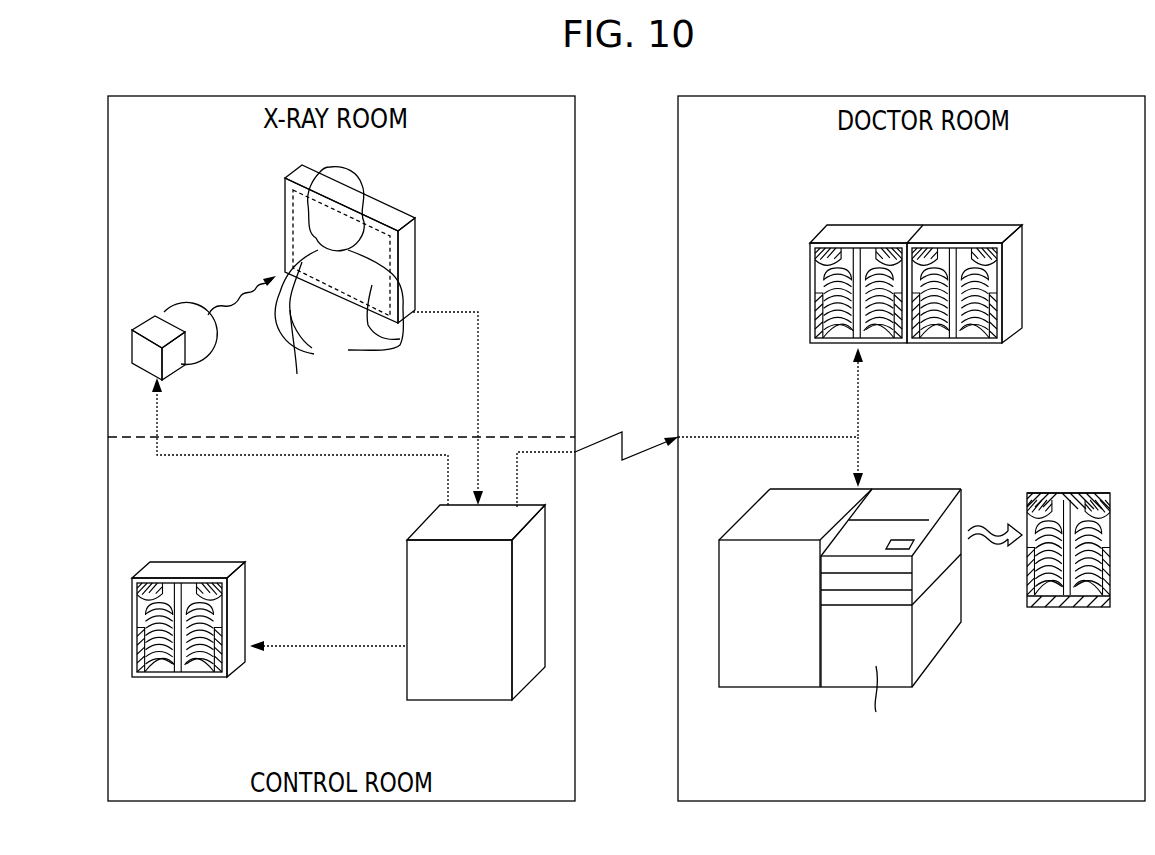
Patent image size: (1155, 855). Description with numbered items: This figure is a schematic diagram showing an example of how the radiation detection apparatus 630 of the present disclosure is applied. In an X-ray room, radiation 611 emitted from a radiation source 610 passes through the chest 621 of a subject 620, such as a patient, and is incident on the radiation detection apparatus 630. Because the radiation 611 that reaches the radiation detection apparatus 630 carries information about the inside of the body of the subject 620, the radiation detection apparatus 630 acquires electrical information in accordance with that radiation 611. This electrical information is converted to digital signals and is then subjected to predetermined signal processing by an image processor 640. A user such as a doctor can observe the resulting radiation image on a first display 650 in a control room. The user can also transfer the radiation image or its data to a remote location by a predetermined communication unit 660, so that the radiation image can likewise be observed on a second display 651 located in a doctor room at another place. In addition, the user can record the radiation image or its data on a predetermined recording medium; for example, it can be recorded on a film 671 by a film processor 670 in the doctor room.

The radiation source 610 is at (172, 362).
The radiation 611 is at (228, 302).
The subject 620 is at (345, 182).
The chest 621 is at (350, 320).
The radiation detection apparatus 630 is at (405, 220).
The image processor 640 is at (405, 566).
The first display 650 is at (192, 567).
The second display 651 is at (848, 224).
The communication unit 660 is at (615, 432).
The film processor 670 is at (767, 688).
The film 671 is at (1070, 607).